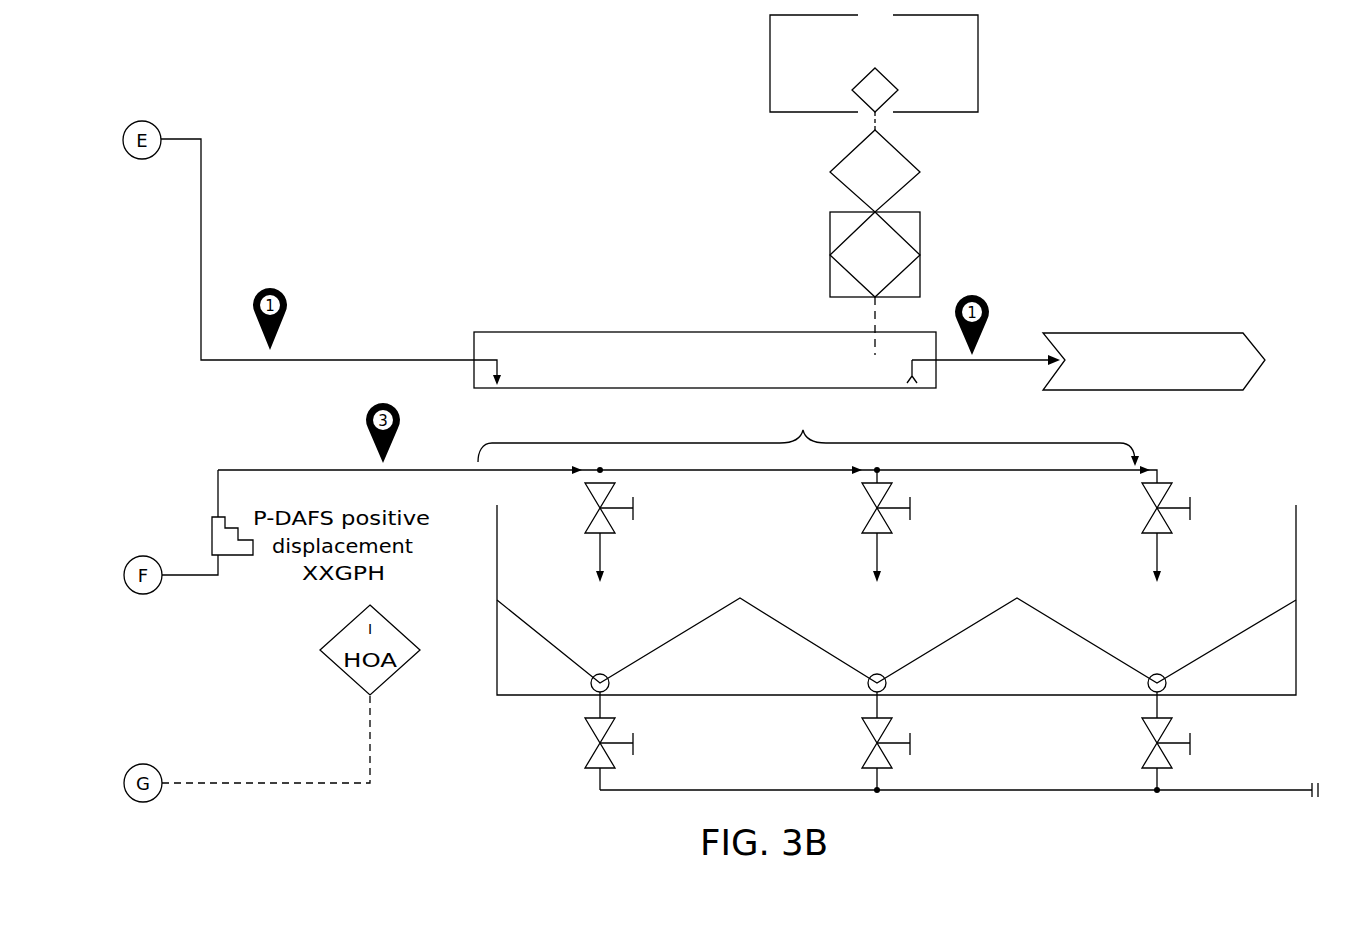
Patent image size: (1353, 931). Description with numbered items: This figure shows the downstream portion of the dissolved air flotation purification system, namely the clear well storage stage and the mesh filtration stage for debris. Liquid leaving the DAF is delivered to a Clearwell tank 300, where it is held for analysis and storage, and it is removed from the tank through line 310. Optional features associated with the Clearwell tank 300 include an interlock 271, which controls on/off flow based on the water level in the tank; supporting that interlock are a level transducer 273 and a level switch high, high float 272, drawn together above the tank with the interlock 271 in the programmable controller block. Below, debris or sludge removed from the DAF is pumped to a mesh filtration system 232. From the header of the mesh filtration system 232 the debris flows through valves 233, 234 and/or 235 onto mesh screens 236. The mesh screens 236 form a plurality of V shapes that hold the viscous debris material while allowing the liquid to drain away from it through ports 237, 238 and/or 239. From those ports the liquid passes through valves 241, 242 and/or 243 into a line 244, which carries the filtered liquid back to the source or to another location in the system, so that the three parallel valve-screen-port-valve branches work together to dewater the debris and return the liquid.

The interlock 271 is at (898, 82).
The level switch high, high float (LSHH) 272 is at (907, 150).
The level transducer 273 is at (922, 228).
The Clearwell tank 300 is at (600, 331).
The line 310 is at (1010, 362).
The mesh filtration system 232 is at (687, 443).
The valve 233 is at (588, 526).
The valve 234 is at (866, 526).
The valve 235 is at (1146, 526).
The mesh screens 236 is at (660, 650).
The port 237 is at (592, 700).
The port 238 is at (868, 700).
The port 239 is at (1148, 700).
The valve 241 is at (588, 758).
The valve 242 is at (866, 758).
The valve 243 is at (1146, 758).
The line 244 is at (1310, 788).